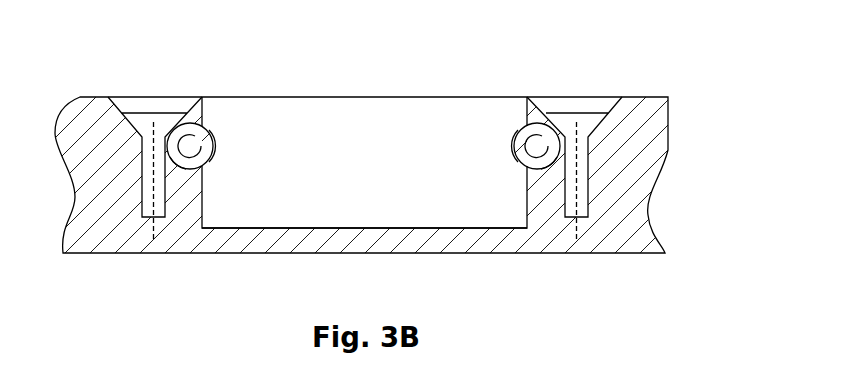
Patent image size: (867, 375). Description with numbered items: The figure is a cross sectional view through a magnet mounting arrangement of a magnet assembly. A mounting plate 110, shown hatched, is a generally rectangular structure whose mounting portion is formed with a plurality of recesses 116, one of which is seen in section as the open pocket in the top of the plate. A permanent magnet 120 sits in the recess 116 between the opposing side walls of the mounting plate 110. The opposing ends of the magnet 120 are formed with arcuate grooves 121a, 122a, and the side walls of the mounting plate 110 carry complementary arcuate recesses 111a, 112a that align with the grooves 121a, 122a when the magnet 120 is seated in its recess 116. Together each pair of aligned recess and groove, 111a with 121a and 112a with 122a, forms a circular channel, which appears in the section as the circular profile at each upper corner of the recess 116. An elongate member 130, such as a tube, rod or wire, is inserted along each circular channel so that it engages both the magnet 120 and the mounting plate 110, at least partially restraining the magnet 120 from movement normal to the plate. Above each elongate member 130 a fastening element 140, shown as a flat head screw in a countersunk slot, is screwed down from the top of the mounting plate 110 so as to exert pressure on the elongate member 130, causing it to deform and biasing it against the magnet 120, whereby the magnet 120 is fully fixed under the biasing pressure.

The mounting plate 110 is at (618, 183).
The permanent magnet 120 is at (370, 140).
The recess 116 is at (397, 228).
The fastening element 140 is at (145, 125).
The elongate member 130 is at (193, 143).
The arcuate groove 121a is at (508, 150).
The arcuate groove 122a is at (217, 147).
The arcuate recess 111a is at (547, 172).
The arcuate recess 112a is at (173, 162).